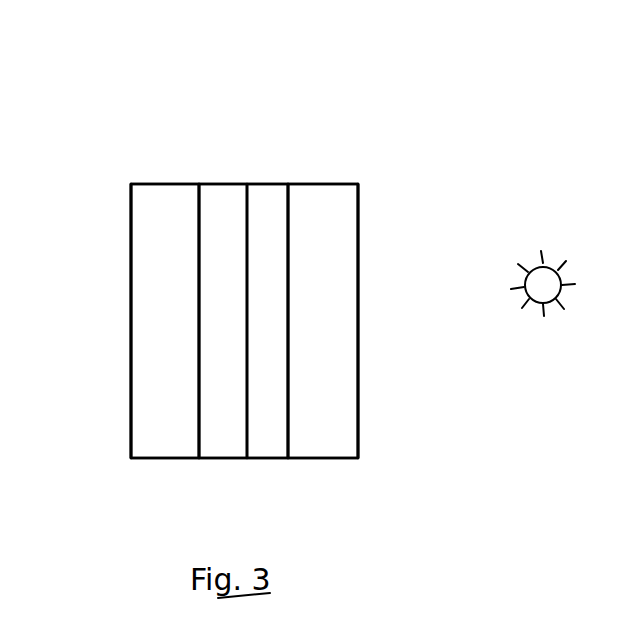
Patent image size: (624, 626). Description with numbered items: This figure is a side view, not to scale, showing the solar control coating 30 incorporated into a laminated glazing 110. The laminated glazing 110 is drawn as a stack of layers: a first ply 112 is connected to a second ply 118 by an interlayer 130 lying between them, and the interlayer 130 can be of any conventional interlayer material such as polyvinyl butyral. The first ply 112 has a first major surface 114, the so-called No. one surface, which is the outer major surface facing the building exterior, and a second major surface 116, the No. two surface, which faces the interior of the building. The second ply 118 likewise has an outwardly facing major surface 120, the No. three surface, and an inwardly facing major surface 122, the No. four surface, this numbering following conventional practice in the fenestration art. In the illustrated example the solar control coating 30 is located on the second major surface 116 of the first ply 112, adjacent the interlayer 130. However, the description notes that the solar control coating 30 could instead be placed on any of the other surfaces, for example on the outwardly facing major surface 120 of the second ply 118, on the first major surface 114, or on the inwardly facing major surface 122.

The laminated glazing 110 is at (501, 94).
The first ply 112 is at (327, 202).
The first major surface 114 is at (360, 222).
The second major surface 116 is at (287, 200).
The second ply 118 is at (147, 440).
The outwardly facing major surface 120 is at (212, 199).
The inwardly facing major surface 122 is at (126, 220).
The interlayer 130 is at (226, 208).
The solar control coating 30 is at (267, 440).